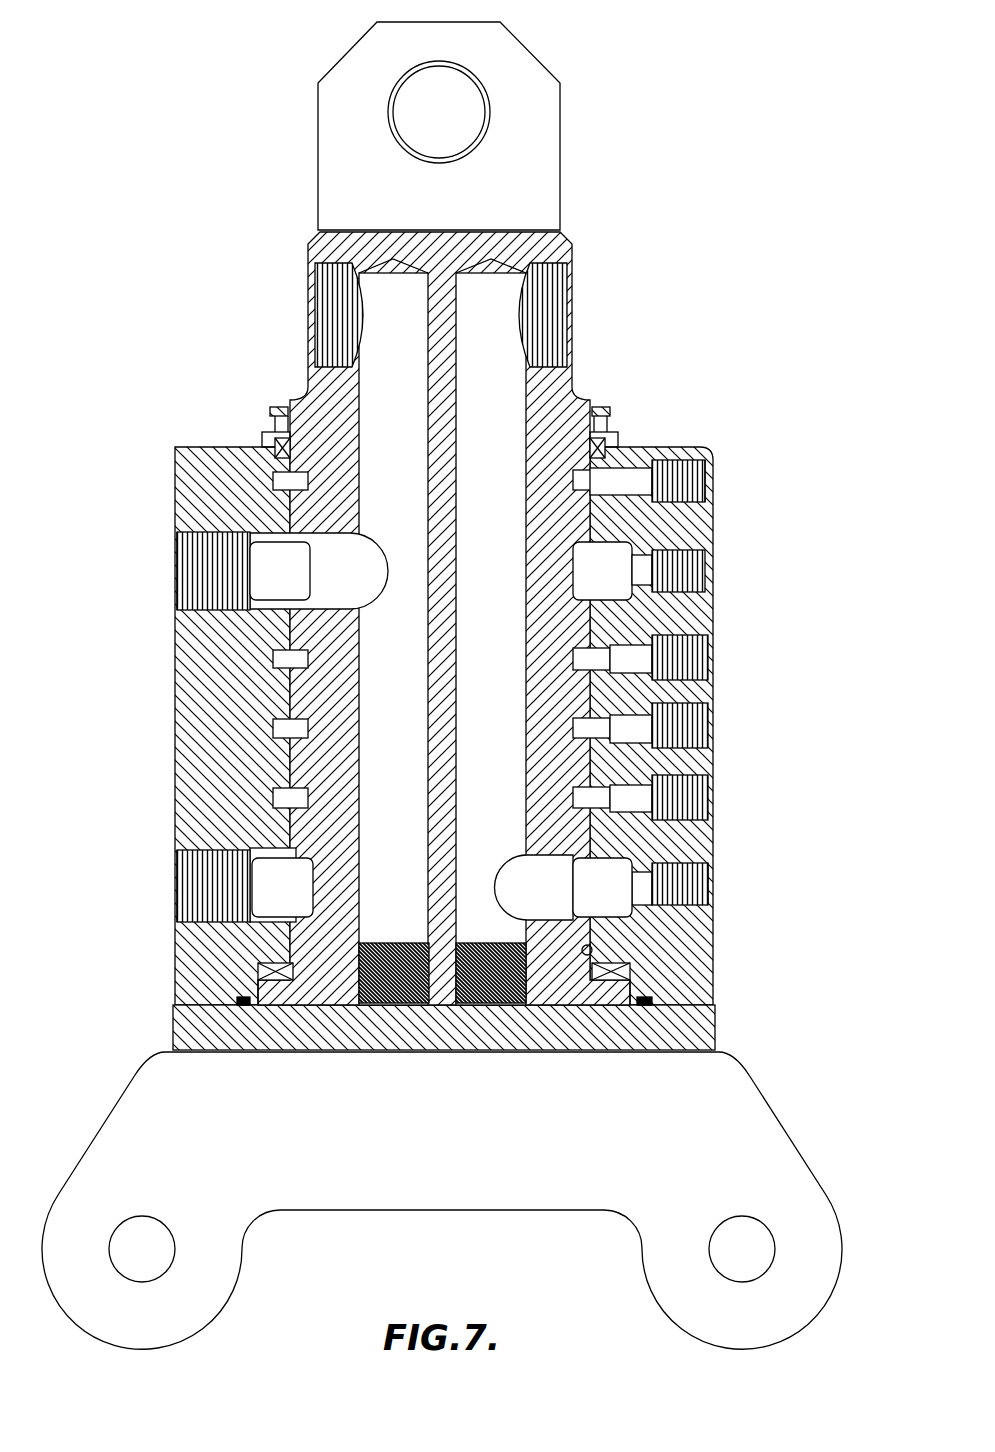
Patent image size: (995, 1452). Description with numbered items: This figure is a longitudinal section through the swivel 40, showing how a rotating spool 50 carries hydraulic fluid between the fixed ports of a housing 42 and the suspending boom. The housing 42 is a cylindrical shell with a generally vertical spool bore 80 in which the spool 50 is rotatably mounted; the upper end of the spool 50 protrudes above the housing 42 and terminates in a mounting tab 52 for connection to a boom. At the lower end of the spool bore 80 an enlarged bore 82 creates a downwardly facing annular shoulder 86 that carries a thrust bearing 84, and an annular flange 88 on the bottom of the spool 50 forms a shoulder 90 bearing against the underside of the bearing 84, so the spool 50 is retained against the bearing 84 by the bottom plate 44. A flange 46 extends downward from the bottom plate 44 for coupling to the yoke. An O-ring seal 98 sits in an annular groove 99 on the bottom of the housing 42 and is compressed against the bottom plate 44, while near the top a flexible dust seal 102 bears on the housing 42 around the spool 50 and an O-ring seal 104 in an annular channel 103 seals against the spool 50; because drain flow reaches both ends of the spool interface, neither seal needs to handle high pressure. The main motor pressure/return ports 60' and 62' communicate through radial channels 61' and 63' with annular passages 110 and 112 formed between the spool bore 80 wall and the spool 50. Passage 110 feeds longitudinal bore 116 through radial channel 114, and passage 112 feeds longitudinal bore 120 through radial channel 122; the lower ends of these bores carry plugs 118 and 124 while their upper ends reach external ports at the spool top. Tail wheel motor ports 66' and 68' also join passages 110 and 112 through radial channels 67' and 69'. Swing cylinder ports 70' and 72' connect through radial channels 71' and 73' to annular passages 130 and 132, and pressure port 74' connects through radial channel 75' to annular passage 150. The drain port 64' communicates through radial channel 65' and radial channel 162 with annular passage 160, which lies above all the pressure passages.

The swivel 40 is at (738, 307).
The housing 42 is at (195, 708).
The bottom plate 44 is at (705, 1028).
The flange 46 is at (752, 1108).
The spool 50 is at (555, 388).
The mounting tab 52 is at (540, 118).
The main hydraulic motor pressure/return port 60' is at (141, 571).
The radial channel 61' is at (173, 568).
The main hydraulic motor pressure/return port 62' is at (143, 886).
The radial channel 63' is at (173, 881).
The drain port 64' is at (745, 481).
The radial channel 65' is at (721, 475).
The pressure/return port 66' is at (712, 570).
The radial channel 67' is at (722, 581).
The pressure/return port 68' is at (746, 884).
The radial channel 69' is at (722, 891).
The port 70' is at (700, 653).
The radial channel 71' is at (721, 661).
The port 72' is at (701, 726).
The radial channel 73' is at (722, 732).
The pressure port 74' is at (701, 799).
The radial channel 75' is at (722, 807).
The spool bore 80 is at (608, 965).
The enlarged bore 82 is at (640, 1000).
The thrust bearing 84 is at (652, 1000).
The annular shoulder 86 is at (265, 970).
The annular flange 88 is at (285, 1005).
The shoulder 90 is at (245, 1000).
The O-ring seal 98 is at (645, 1005).
The annular groove 99 is at (242, 1005).
The flexible dust seal 102 is at (594, 406).
The annular channel 103 is at (270, 440).
The O-ring seal 104 is at (618, 446).
The annular passage 110 is at (277, 548).
The annular passage 112 is at (280, 870).
The radial channel 114 is at (370, 545).
The longitudinal bore 116 is at (372, 676).
The plug 118 is at (395, 943).
The longitudinal bore 120 is at (472, 676).
The radial channel 122 is at (510, 870).
The plug 124 is at (492, 943).
The annular passage 130 is at (280, 660).
The annular passage 132 is at (280, 730).
The annular passage 150 is at (280, 800).
The annular passage 160 is at (280, 478).
The radial channel 162 is at (620, 478).